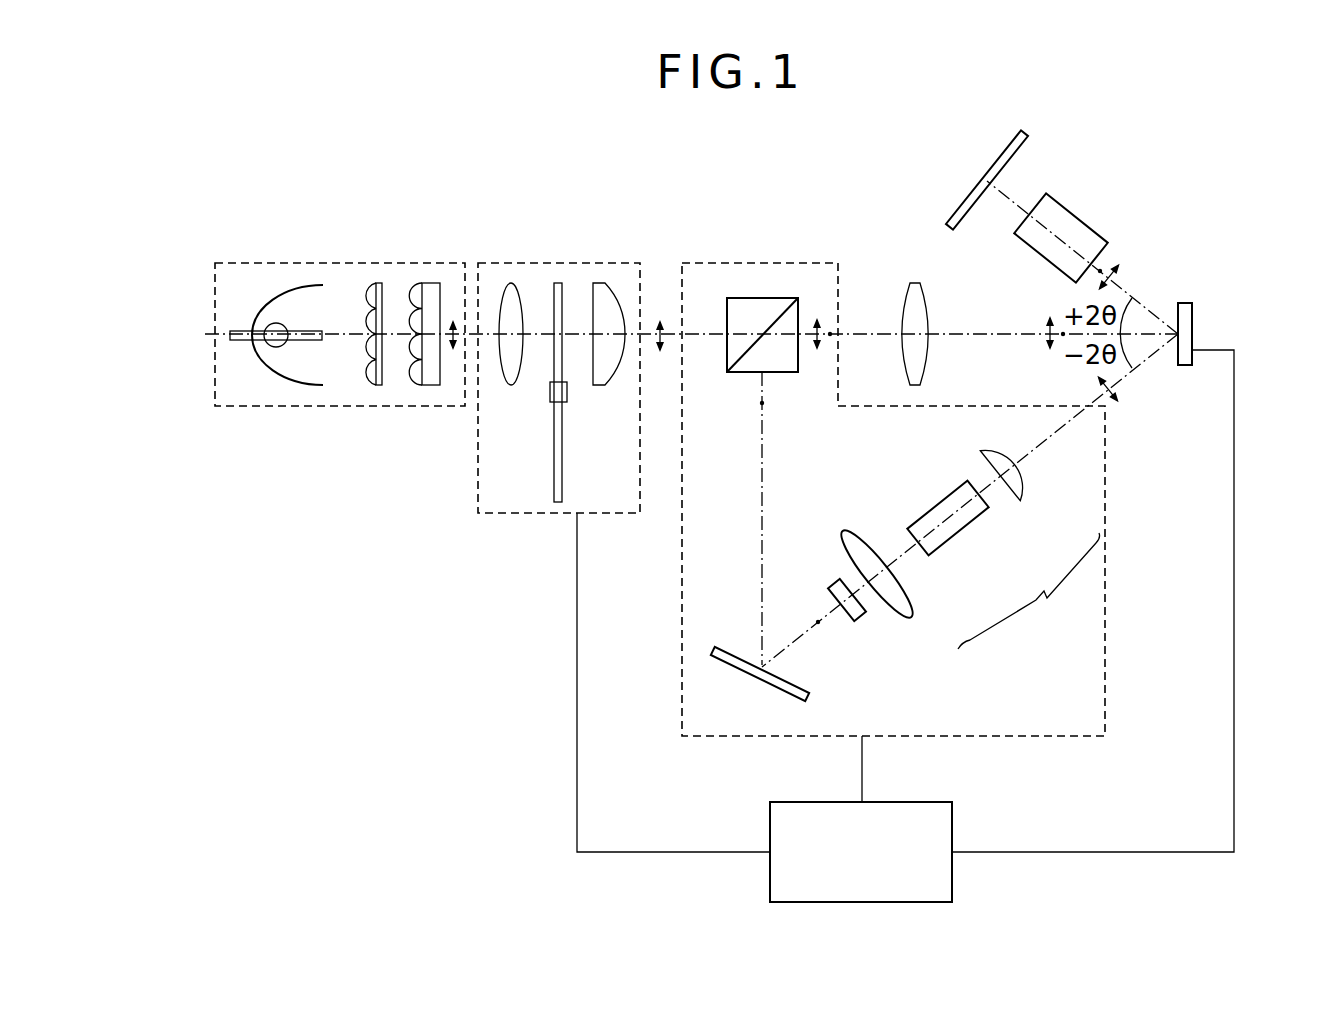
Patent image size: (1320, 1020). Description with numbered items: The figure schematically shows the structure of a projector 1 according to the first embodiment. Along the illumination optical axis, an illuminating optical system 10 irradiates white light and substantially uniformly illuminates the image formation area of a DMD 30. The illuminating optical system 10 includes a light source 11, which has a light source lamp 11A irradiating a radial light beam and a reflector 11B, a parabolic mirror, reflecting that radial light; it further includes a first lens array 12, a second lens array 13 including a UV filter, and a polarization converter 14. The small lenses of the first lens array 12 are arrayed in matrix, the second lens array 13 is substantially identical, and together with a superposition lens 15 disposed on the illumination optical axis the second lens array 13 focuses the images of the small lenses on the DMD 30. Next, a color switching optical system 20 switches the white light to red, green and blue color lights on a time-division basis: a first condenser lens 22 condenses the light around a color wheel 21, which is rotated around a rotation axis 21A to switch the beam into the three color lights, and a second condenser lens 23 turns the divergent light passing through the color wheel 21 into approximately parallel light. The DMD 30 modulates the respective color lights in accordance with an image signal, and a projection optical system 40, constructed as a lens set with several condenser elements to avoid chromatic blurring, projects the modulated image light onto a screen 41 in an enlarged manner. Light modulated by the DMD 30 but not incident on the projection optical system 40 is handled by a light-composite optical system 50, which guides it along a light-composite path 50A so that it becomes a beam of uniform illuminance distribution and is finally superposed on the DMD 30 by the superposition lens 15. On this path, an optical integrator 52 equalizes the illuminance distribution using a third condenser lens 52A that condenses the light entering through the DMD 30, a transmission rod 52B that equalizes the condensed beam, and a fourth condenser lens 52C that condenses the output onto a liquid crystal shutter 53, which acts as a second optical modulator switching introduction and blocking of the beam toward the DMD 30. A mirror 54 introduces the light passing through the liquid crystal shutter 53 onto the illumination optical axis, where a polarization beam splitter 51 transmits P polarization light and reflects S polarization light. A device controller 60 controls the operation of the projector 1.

The projector 1 is at (673, 195).
The illuminating optical system 10 is at (410, 263).
The light source 11 is at (295, 297).
The light source lamp 11A is at (300, 330).
The reflector 11B is at (304, 287).
The first lens array 12 is at (368, 380).
The second lens array 13 is at (416, 382).
The polarization converter 14 is at (432, 386).
The superposition lens 15 is at (928, 302).
The color switching optical system 20 is at (543, 263).
The color wheel 21 is at (559, 392).
The rotation axis 21A is at (550, 400).
The first condenser lens 22 is at (511, 385).
The second condenser lens 23 is at (604, 386).
The DMD 30 is at (1192, 310).
The projection optical system 40 is at (1090, 228).
The screen 41 is at (1027, 140).
The light-composite optical system 50 is at (1105, 482).
The light-composite path 50A is at (765, 455).
The polarization beam splitter 51 is at (727, 365).
The optical integrator 52 is at (966, 544).
The third condenser lens 52A is at (1018, 490).
The transmission rod 52B is at (955, 540).
The fourth condenser lens 52C is at (905, 606).
The liquid crystal shutter 53 is at (834, 584).
The mirror 54 is at (805, 698).
The device controller 60 is at (952, 817).